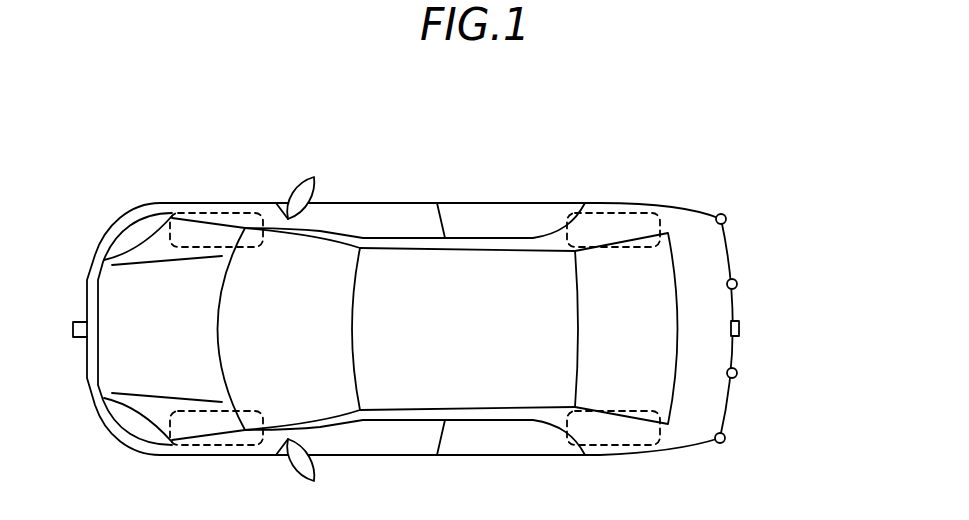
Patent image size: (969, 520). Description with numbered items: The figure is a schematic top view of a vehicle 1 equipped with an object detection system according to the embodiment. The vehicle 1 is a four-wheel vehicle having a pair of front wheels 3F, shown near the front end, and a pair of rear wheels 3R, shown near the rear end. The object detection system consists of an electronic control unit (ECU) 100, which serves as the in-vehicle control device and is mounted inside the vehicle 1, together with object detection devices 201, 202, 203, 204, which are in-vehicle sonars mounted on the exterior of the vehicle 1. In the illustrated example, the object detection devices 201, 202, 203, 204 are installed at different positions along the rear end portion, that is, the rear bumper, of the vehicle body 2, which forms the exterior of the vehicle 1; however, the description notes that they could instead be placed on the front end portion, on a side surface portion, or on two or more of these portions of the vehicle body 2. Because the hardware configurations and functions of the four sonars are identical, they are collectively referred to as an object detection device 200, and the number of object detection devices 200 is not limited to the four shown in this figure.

The vehicle 1 is at (556, 146).
The electronic control unit (ECU) 100 is at (470, 295).
The vehicle body 2 is at (684, 207).
The front wheels 3F is at (220, 212).
The rear wheels 3R is at (618, 212).
The object detection device 200 is at (791, 324).
The object detection device 201 is at (726, 438).
The object detection device 202 is at (738, 375).
The object detection device 203 is at (738, 282).
The object detection device 204 is at (727, 216).